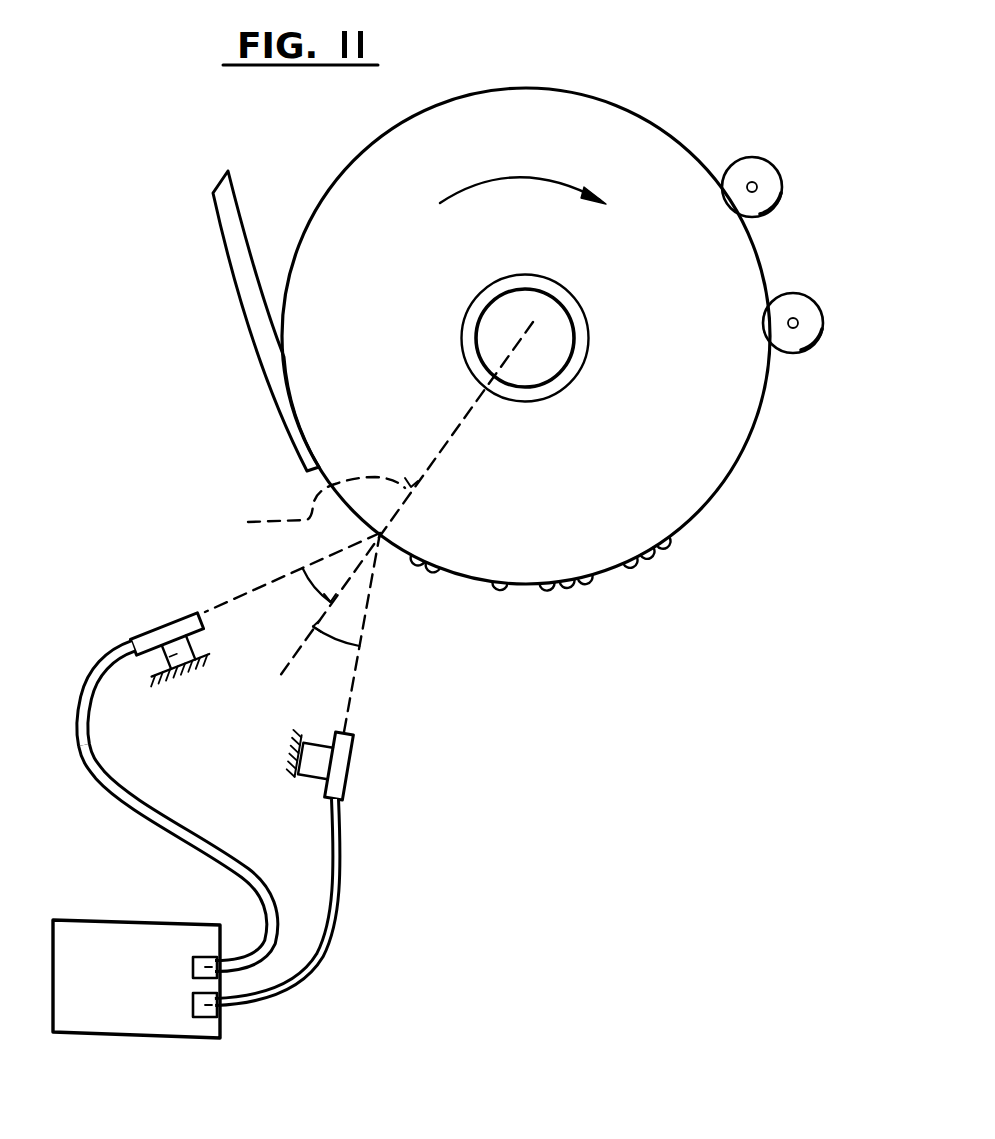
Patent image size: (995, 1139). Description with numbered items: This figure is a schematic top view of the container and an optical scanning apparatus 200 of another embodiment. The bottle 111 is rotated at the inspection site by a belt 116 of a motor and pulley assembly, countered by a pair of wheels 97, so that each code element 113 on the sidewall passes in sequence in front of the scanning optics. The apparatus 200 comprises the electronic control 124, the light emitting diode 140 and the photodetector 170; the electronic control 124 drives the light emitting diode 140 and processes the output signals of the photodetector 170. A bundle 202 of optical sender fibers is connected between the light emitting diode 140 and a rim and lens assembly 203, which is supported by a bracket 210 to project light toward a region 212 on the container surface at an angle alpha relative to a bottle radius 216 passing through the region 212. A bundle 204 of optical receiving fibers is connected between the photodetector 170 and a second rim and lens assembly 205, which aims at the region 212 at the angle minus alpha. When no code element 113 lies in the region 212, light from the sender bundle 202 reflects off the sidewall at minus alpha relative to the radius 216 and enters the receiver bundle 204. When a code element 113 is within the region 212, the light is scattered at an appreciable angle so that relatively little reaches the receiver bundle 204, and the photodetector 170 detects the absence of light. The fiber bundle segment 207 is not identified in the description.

The wheels 97 is at (800, 293).
The bottle 111 is at (715, 493).
The code element 113 is at (417, 566).
The belt 116 is at (282, 402).
The electronic control 124 is at (222, 1023).
The light emitting diode 140 is at (193, 1005).
The photodetector 170 is at (193, 965).
The optical scanning apparatus 200 is at (95, 492).
The bundle of optical sender fibers 202 is at (334, 923).
The rim and lens assembly 203 is at (352, 759).
The bundle of optical receiving fibers 204 is at (177, 806).
The rim and lens assembly 205 is at (160, 638).
The fiber optic bundle 207 is at (134, 664).
The bracket 210 is at (314, 776).
The region 212 is at (380, 533).
The bottle radius 216 is at (296, 505).